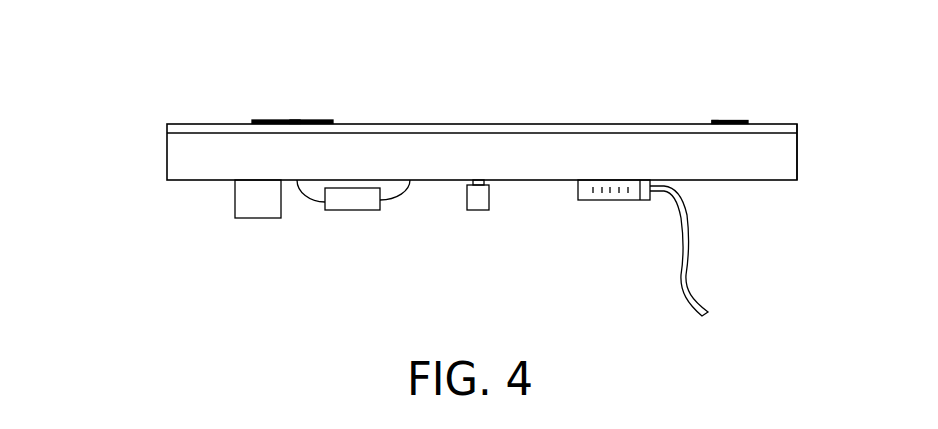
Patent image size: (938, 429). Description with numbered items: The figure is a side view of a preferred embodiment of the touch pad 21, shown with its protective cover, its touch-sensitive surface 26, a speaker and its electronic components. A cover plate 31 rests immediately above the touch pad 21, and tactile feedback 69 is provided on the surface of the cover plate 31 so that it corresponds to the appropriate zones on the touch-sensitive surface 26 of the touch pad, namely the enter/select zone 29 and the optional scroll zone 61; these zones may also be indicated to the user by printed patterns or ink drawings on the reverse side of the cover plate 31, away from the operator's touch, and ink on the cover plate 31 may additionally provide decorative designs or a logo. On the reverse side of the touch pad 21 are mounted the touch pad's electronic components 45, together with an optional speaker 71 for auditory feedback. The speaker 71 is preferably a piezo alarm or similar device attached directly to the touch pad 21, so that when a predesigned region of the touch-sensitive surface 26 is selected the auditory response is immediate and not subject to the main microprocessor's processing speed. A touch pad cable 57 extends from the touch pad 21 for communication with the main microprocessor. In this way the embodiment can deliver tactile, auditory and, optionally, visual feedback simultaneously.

The touch pad 21 is at (140, 155).
The touch-sensitive surface 26 is at (820, 133).
The enter/select zone 29 is at (279, 121).
The cover plate 31 is at (207, 128).
The electronic components 45 is at (508, 266).
The touch pad cable 57 is at (687, 219).
The scroll zone 61 is at (730, 121).
The tactile feedback 69 is at (713, 121).
The speaker 71 is at (253, 199).